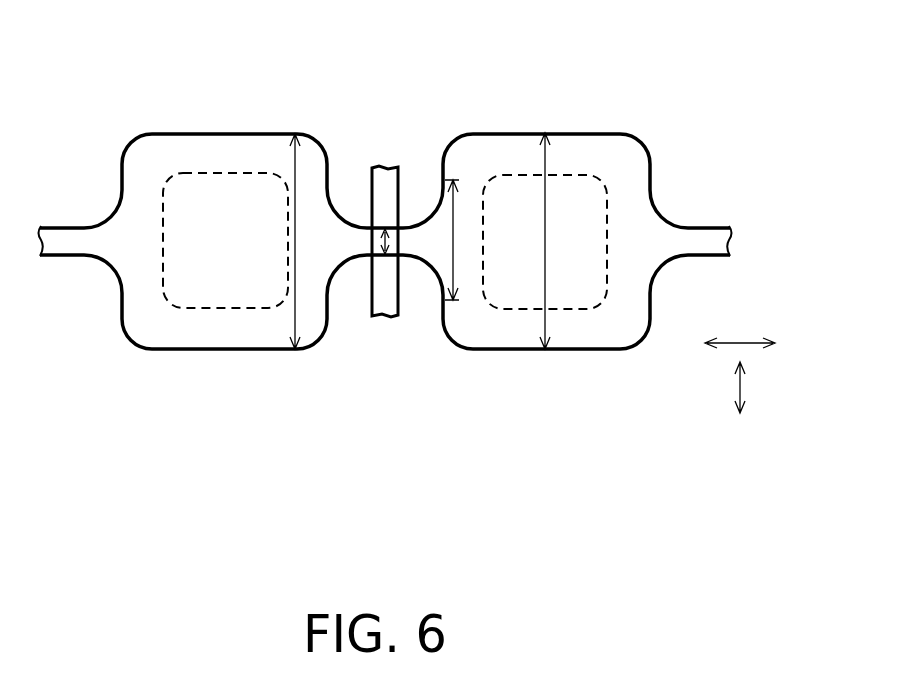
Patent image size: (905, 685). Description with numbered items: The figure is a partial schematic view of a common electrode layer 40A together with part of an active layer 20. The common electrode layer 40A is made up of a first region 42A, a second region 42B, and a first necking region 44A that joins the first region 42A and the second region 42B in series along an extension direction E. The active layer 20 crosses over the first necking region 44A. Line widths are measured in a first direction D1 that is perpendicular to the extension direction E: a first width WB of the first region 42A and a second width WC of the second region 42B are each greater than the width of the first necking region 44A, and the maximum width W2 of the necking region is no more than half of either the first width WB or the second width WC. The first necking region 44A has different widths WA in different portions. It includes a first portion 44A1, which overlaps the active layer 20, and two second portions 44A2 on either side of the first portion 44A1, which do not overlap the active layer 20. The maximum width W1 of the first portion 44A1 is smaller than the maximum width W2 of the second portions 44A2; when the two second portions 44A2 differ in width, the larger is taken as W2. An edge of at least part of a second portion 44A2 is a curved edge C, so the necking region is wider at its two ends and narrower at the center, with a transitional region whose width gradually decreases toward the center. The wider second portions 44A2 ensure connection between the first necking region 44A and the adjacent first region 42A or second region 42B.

The common electrode layer 40A is at (425, 254).
The first region 42A is at (222, 337).
The second region 42B is at (588, 337).
The first necking region 44A is at (411, 346).
The first portion 44A1 is at (392, 245).
The second portion 44A2 is at (355, 247).
The active layer 20 is at (383, 180).
The curved edge C is at (343, 207).
The widths of the first necking region WA is at (438, 52).
The maximum width of the first portion W1 is at (400, 243).
The maximum width of the second portion W2 is at (453, 217).
The first width WB is at (292, 160).
The second width WC is at (547, 160).
The extension direction E is at (751, 344).
The first direction D1 is at (757, 387).